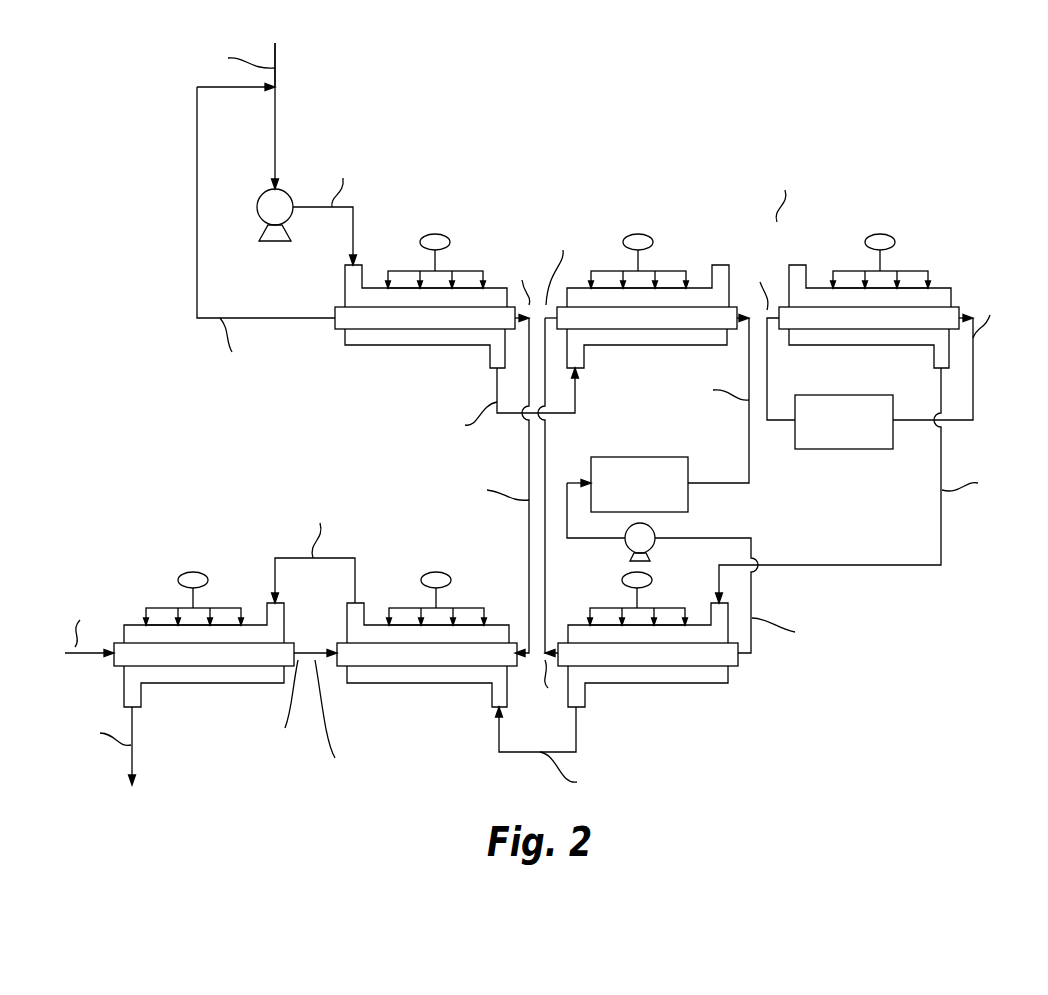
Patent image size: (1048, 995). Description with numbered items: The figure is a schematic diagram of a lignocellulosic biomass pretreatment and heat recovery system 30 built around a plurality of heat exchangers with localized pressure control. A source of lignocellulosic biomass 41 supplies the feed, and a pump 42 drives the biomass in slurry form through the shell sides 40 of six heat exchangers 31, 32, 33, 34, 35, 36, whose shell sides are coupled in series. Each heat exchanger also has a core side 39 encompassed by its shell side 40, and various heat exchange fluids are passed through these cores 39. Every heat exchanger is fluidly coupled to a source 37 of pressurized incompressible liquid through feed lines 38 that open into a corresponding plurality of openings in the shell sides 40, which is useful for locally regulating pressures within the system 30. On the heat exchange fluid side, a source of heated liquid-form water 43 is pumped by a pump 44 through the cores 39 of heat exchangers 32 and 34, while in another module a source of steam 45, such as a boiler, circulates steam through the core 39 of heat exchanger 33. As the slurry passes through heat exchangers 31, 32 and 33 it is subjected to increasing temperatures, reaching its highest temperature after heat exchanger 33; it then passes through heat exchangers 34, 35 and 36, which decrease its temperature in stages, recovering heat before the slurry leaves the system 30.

The lignocellulosic biomass pretreatment system 30 is at (567, 112).
The heat exchanger 31 is at (345, 340).
The heat exchanger 32 is at (655, 350).
The heat exchanger 33 is at (830, 348).
The heat exchanger 34 is at (730, 680).
The heat exchanger 35 is at (388, 685).
The heat exchanger 36 is at (168, 685).
The source of pressurized liquid 37 is at (537, 393).
The feed lines 38 is at (543, 420).
The core side 39 is at (536, 487).
The shell side 40 is at (536, 534).
The source of lignocellulosic biomass 41 is at (280, 62).
The pump 42 is at (258, 210).
The source of heated liquid-form water 43 is at (635, 457).
The pump 44 is at (656, 532).
The source of steam 45 is at (825, 449).